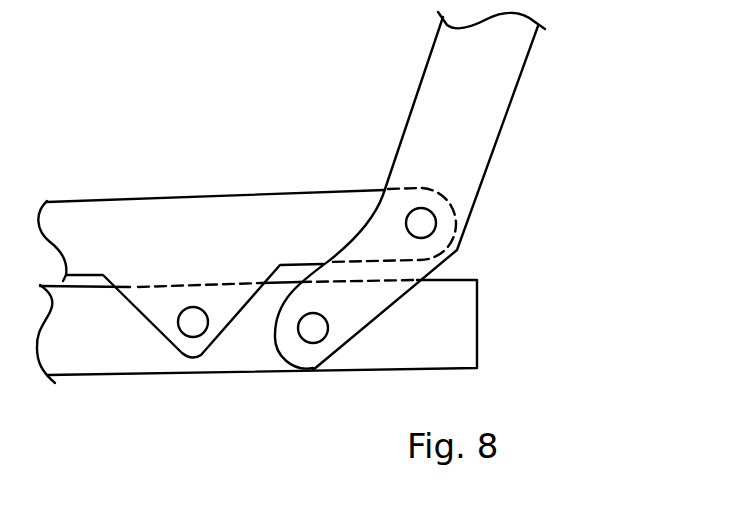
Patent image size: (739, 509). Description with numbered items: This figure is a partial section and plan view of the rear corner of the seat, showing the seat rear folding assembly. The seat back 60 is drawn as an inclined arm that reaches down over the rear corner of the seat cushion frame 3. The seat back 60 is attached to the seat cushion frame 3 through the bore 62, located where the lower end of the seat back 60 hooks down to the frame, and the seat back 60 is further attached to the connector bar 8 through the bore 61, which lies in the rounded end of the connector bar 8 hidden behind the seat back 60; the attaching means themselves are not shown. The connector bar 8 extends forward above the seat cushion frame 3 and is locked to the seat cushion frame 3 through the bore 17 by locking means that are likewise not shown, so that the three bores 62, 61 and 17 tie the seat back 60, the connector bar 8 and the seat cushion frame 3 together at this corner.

The connector bar 8 is at (208, 228).
The seat cushion frame 3 is at (450, 337).
The seat back 60 is at (482, 107).
The bore 61 is at (421, 223).
The bore 62 is at (313, 328).
The bore 17 is at (193, 322).